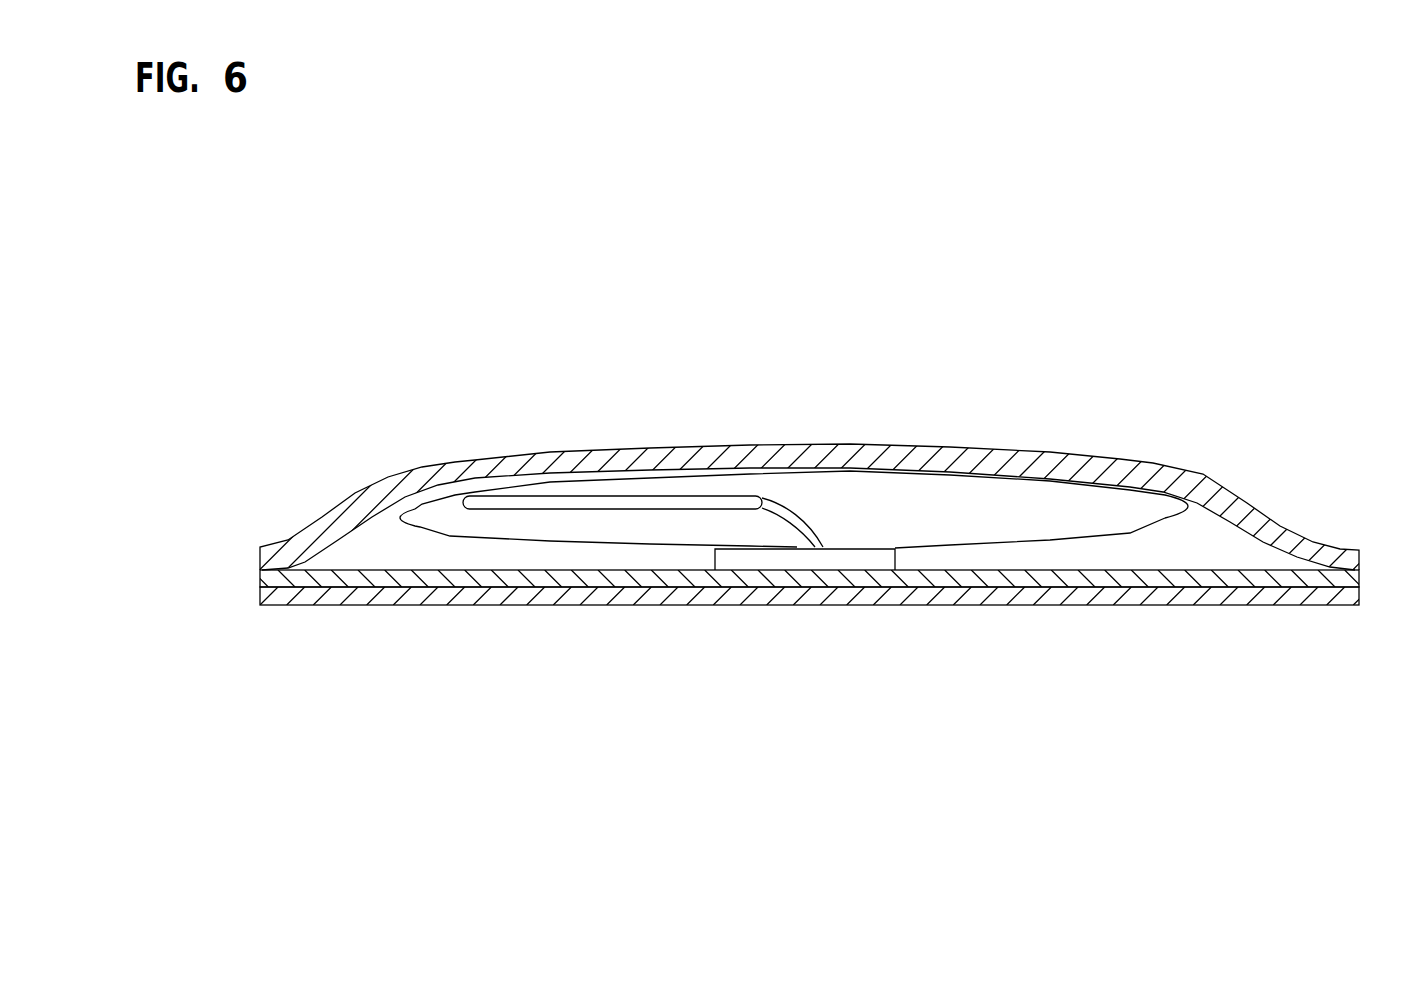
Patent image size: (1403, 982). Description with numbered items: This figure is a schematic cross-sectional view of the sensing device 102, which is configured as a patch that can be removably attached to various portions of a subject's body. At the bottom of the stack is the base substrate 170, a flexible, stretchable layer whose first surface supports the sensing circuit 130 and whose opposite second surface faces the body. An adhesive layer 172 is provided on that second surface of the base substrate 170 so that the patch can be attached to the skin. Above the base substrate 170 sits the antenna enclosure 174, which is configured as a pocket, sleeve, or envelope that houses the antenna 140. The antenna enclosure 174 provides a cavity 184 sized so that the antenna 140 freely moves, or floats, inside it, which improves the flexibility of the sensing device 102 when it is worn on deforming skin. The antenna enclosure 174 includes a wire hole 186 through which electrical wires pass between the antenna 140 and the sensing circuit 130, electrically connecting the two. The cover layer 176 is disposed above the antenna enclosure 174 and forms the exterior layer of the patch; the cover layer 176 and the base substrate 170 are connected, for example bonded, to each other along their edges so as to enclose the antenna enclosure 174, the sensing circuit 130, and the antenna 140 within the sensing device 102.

The sensing device 102 is at (266, 260).
The sensing circuit 130 is at (862, 560).
The antenna 140 is at (657, 502).
The base substrate 170 is at (293, 582).
The adhesive layer 172 is at (328, 597).
The antenna enclosure 174 is at (396, 521).
The cover layer 176 is at (435, 482).
The cavity 184 is at (1047, 503).
The wire hole 186 is at (830, 547).